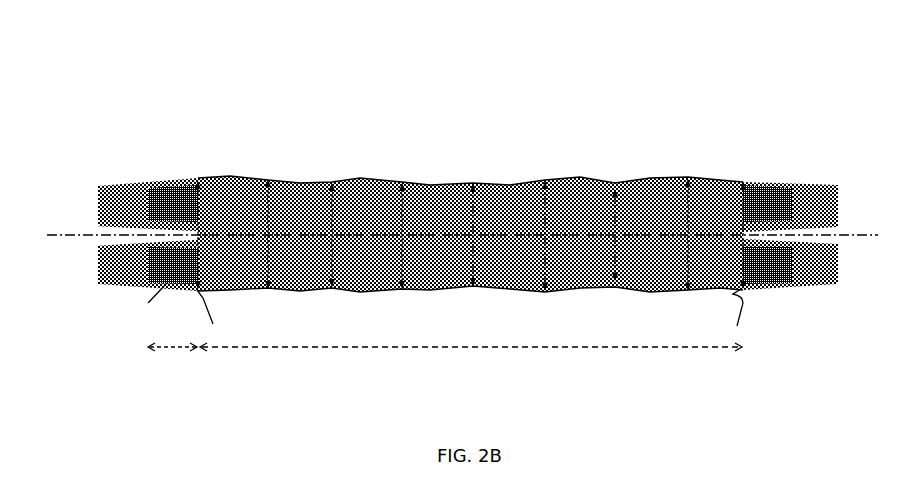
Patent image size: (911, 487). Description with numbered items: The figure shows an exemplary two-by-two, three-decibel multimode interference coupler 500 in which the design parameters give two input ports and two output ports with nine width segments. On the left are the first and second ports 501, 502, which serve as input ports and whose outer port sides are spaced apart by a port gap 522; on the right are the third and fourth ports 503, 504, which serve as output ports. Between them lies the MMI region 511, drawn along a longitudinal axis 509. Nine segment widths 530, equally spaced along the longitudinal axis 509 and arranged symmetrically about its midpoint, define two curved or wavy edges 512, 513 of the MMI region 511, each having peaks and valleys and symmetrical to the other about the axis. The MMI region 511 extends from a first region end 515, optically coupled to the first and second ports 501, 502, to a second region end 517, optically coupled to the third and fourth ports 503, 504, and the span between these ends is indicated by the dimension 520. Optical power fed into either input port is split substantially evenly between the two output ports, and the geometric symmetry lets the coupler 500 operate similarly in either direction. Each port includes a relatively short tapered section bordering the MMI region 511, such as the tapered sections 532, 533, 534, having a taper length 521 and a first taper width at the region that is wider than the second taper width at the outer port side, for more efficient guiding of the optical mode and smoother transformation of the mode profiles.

The MMI coupler 500 is at (427, 198).
The first port 501 is at (110, 285).
The second port 502 is at (118, 187).
The third port 503 is at (815, 286).
The fourth port 504 is at (820, 185).
The longitudinal axis 509 is at (862, 238).
The MMI region 511 is at (515, 208).
The curved edge 512 is at (655, 182).
The curved edge 513 is at (580, 290).
The first region end 515 is at (215, 318).
The second region end 517 is at (738, 318).
The body length 520 is at (462, 349).
The taper length 521 is at (175, 350).
The port gap 522 is at (118, 229).
The segment widths 530 is at (467, 208).
The tapered section 532 is at (178, 182).
The tapered section 533 is at (773, 285).
The tapered section 534 is at (772, 185).